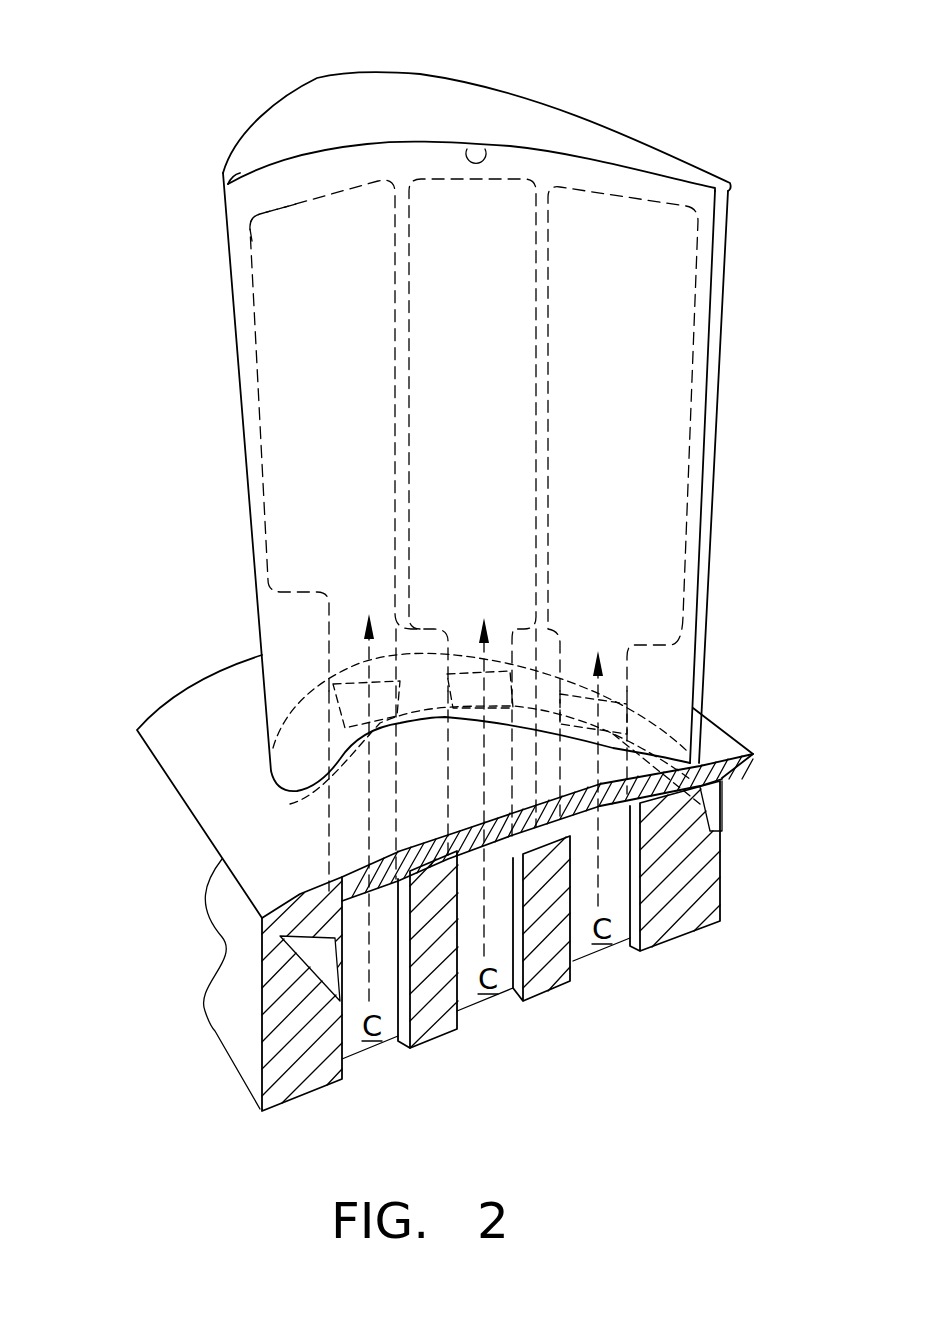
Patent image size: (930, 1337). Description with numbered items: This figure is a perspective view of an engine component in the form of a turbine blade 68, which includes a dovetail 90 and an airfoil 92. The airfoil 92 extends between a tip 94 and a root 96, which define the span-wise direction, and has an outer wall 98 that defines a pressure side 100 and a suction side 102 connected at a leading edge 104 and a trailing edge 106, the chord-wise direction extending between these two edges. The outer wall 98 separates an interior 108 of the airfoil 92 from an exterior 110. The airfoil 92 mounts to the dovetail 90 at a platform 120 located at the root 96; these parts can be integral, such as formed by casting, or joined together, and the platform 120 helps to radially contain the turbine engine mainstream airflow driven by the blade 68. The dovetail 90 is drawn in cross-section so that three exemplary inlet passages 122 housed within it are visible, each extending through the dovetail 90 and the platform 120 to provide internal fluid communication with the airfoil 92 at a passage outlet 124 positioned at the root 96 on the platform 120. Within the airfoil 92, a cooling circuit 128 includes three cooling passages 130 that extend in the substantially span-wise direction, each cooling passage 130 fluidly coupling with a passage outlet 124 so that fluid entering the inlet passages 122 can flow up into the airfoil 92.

The turbine blade 68 is at (72, 57).
The dovetail 90 is at (245, 978).
The airfoil 92 is at (226, 378).
The tip 94 is at (328, 117).
The root 96 is at (653, 740).
The outer wall 98 is at (243, 323).
The pressure side 100 is at (500, 141).
The suction side 102 is at (458, 77).
The leading edge 104 is at (247, 462).
The trailing edge 106 is at (720, 397).
The interior 108 is at (434, 198).
The exterior 110 is at (78, 597).
The platform 120 is at (187, 699).
The inlet passage 122 is at (373, 1047).
The passage outlet 124 is at (742, 808).
The cooling circuit 128 is at (246, 211).
The cooling passage 130 is at (547, 173).